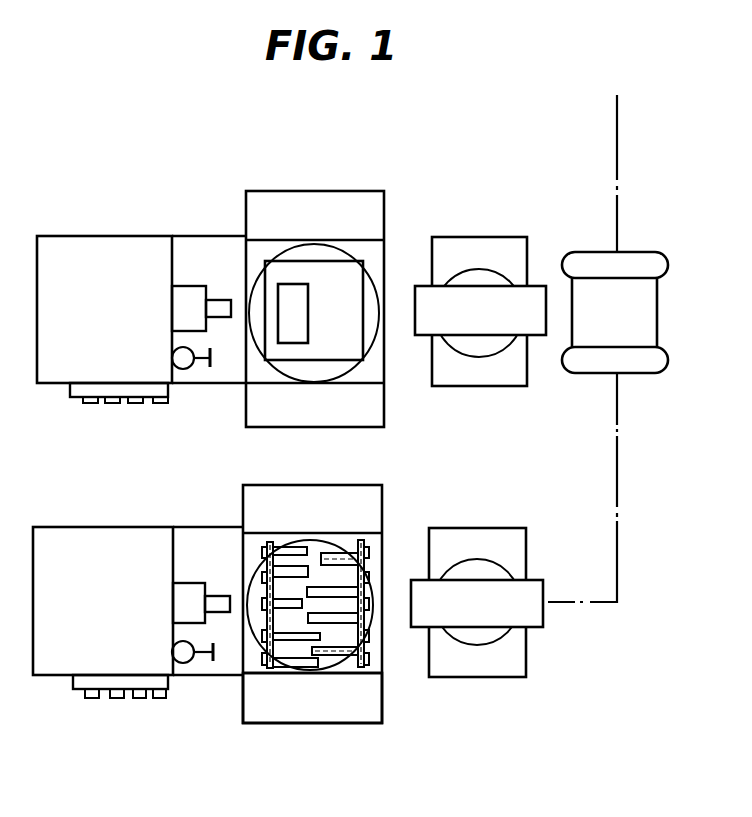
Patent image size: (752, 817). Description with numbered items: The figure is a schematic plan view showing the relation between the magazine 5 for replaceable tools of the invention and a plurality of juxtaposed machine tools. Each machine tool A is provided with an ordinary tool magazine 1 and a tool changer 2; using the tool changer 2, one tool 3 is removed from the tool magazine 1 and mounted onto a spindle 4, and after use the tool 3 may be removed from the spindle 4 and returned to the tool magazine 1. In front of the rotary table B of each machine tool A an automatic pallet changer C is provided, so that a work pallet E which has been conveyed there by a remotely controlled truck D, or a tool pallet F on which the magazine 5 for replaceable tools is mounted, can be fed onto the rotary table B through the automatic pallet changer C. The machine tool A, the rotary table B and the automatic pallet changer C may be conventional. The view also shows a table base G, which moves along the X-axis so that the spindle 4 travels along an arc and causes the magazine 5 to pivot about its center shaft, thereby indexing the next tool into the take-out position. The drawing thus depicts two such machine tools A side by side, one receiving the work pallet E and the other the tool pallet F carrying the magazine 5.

The machine tool A is at (110, 236).
The rotary table B is at (330, 246).
The automatic pallet changer C is at (488, 237).
The remotely controlled truck D is at (640, 253).
The work pallet E is at (348, 356).
The tool pallet F is at (313, 558).
The table base G is at (290, 715).
The tool magazine 1 is at (70, 388).
The tool changer 2 is at (183, 369).
The tool 3 is at (135, 403).
The spindle 4 is at (220, 300).
The magazine for replaceable tools 5 is at (352, 668).